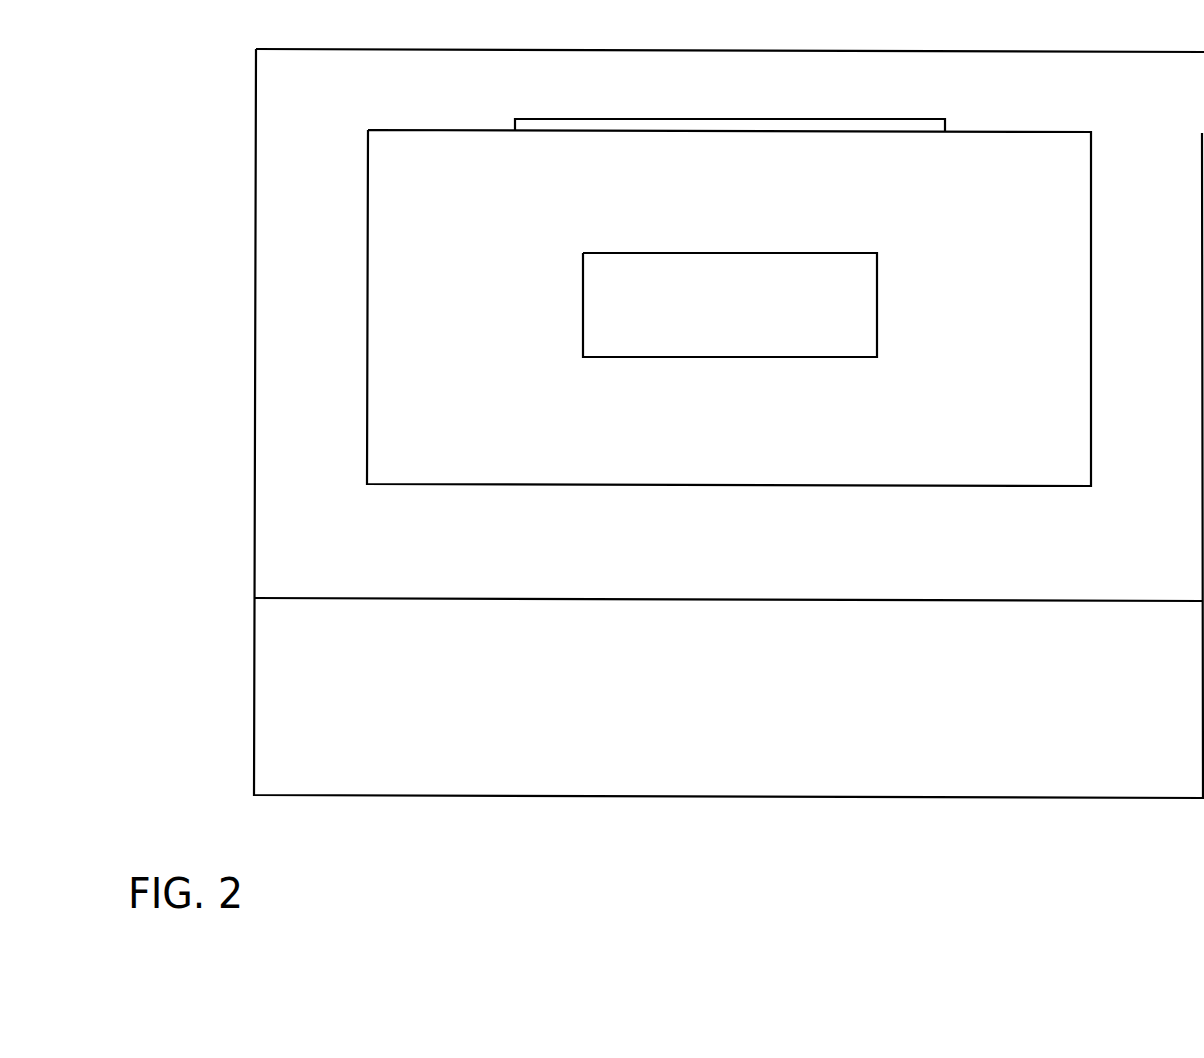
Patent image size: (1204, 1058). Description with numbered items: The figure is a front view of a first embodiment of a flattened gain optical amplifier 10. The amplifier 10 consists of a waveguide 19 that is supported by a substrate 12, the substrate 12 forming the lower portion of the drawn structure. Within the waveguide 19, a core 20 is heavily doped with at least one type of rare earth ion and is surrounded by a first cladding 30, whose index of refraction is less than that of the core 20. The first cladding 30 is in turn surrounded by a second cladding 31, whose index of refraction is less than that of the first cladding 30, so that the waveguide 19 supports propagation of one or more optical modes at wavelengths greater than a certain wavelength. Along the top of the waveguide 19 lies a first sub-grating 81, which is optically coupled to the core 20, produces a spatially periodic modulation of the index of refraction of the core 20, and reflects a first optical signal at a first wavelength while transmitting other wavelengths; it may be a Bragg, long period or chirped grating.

The flattened gain optical amplifier 10 is at (631, 898).
The substrate 12 is at (874, 760).
The waveguide 19 is at (246, 220).
The core 20 is at (692, 313).
The first cladding 30 is at (526, 439).
The second cladding 31 is at (300, 463).
The first sub-grating 81 is at (503, 120).